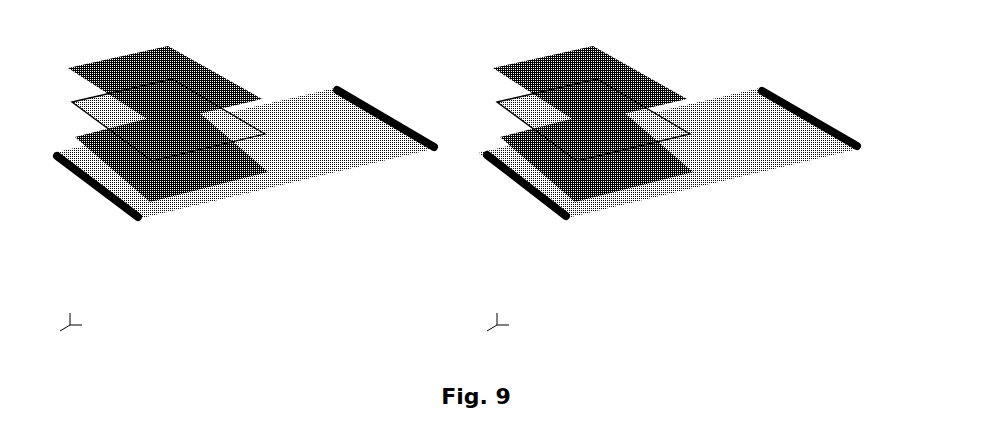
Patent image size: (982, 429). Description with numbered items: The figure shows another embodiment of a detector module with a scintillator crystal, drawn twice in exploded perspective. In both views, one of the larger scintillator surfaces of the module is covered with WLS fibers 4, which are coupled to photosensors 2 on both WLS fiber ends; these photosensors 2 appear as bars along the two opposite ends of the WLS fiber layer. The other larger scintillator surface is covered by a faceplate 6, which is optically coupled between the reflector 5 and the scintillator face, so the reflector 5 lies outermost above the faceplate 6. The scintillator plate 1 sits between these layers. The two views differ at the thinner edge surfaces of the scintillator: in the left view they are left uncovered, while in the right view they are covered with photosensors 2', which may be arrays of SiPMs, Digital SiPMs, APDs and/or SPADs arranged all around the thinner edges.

The plate 1 is at (384, 154).
The photosensors 2 is at (450, 128).
The photosensors 2' is at (384, 180).
The WLS fibers 4 is at (317, 157).
The reflector 5 is at (178, 72).
The faceplate 6 is at (102, 119).